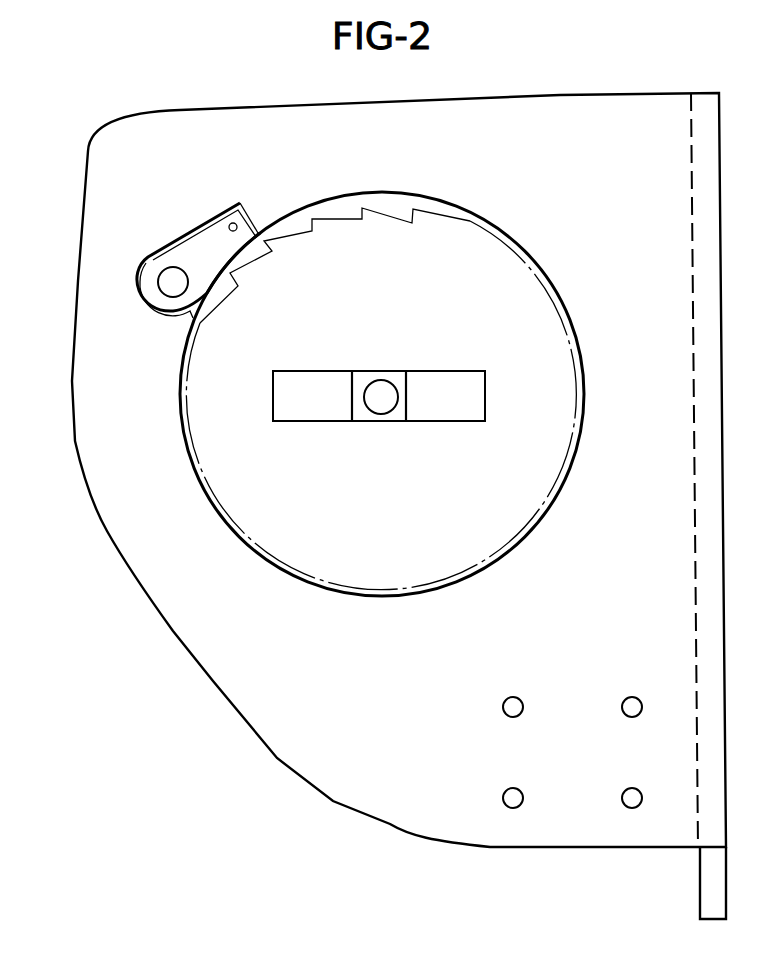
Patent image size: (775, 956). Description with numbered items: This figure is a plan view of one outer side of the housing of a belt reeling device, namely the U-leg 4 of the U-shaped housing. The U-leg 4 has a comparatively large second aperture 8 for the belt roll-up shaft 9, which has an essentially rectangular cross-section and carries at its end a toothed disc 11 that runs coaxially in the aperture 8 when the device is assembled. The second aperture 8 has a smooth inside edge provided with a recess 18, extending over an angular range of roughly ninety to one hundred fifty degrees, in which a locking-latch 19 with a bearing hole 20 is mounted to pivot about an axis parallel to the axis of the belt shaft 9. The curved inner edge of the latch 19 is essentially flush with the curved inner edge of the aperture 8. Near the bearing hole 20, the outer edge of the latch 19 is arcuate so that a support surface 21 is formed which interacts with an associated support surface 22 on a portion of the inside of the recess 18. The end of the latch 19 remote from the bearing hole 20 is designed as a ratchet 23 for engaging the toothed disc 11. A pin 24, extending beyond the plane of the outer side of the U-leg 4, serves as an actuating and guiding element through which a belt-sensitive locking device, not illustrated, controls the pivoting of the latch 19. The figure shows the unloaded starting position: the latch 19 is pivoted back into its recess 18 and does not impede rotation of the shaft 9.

The U-leg 4 is at (612, 101).
The second aperture 8 is at (514, 246).
The belt roll-up shaft 9 is at (396, 378).
The toothed disc 11 is at (462, 231).
The recess 18 is at (183, 233).
The locking-latch 19 is at (203, 240).
The bearing hole 20 is at (167, 273).
The support surface 21 is at (147, 306).
The support surface 22 is at (138, 275).
The ratchet 23 is at (247, 232).
The pin 24 is at (233, 221).